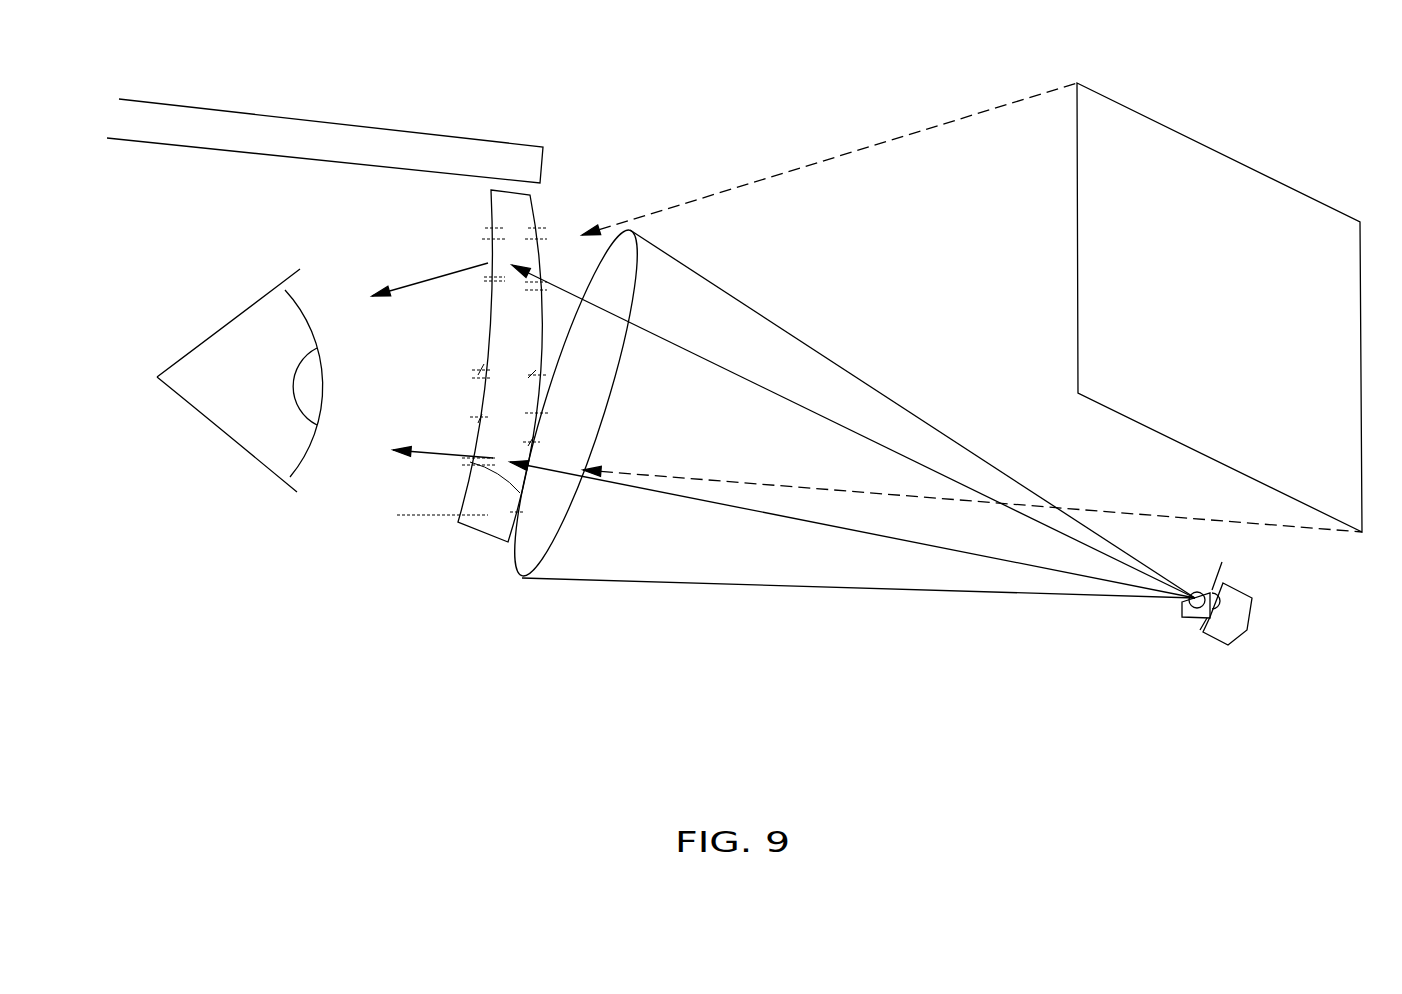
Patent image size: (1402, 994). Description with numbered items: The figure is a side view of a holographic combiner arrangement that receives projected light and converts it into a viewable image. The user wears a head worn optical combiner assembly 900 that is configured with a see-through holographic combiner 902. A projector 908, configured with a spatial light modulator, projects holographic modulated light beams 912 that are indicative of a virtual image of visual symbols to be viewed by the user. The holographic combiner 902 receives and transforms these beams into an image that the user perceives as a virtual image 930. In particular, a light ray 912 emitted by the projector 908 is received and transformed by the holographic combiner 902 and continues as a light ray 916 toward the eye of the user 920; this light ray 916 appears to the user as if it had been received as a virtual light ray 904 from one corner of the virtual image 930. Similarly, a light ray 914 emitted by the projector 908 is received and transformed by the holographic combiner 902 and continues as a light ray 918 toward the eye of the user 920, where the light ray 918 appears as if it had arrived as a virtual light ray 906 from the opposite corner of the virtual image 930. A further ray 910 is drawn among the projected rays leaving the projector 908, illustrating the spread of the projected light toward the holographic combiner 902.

The head worn optical combiner assembly 900 is at (402, 128).
The see-through holographic combiner 902 is at (482, 533).
The virtual light ray 904 is at (1090, 508).
The virtual light ray 906 is at (805, 167).
The projector 908 is at (1213, 640).
The lower projected light ray 910 is at (850, 587).
The holographic modulated light beam 912 is at (968, 553).
The light ray 914 is at (908, 455).
The light ray 916 is at (435, 455).
The light ray 918 is at (448, 272).
The eye of the user 920 is at (273, 457).
The virtual image 930 is at (1200, 140).